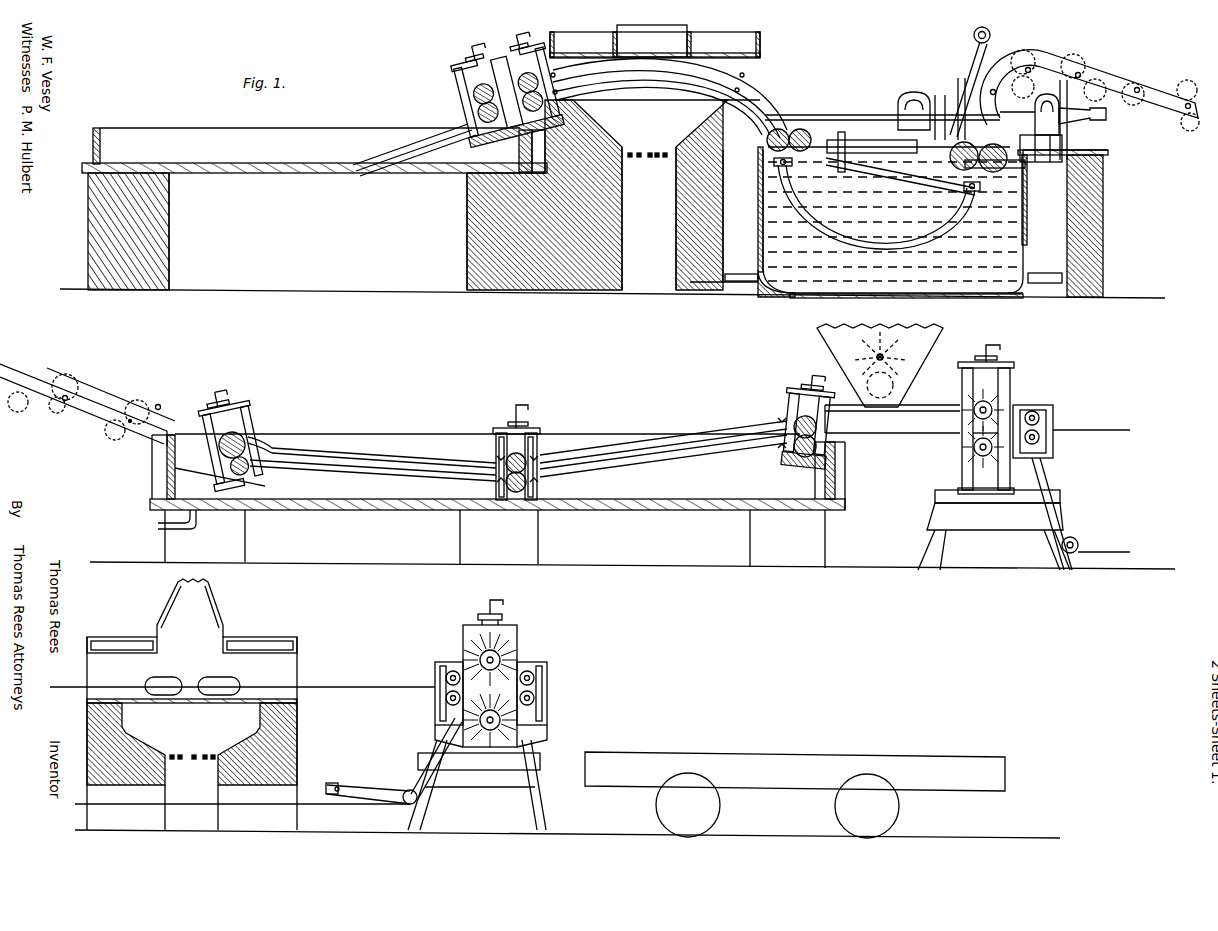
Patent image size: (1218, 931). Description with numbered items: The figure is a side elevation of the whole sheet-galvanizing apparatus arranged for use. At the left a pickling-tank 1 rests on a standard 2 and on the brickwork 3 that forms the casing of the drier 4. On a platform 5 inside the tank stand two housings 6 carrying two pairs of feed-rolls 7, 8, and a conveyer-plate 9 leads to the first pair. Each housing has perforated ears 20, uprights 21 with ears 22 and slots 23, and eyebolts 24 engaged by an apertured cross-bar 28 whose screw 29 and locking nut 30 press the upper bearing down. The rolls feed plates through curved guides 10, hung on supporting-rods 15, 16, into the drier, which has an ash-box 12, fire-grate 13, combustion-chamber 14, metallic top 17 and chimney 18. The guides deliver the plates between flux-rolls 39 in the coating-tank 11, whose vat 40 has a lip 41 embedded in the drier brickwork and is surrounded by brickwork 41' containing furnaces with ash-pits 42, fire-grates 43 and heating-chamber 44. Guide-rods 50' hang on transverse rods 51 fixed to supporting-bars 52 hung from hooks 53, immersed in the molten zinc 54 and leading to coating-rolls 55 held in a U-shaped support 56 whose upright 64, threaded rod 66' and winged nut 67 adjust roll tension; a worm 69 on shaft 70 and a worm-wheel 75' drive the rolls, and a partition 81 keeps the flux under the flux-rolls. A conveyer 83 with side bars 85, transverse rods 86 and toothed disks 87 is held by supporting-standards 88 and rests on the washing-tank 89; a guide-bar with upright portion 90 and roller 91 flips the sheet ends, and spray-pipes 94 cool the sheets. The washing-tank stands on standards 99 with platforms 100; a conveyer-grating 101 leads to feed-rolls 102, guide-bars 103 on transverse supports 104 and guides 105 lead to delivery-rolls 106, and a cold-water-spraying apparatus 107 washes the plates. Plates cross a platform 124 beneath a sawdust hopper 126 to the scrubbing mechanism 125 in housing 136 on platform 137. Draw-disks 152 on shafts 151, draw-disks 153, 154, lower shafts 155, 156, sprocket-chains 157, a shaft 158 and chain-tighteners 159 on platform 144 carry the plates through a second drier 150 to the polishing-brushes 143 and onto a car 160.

The pickling-tank 1 is at (298, 138).
The standard 2 is at (170, 207).
The brickwork 3 is at (466, 205).
The drier 4 is at (663, 45).
The platform 5 is at (490, 140).
The housings 6 is at (505, 86).
The feed-rolls 7 is at (458, 104).
The feed-rolls 8 is at (556, 58).
The conveyer-plate 9 is at (408, 140).
The guides 10 is at (646, 86).
The coating-tank 11 is at (868, 112).
The ash-box 12 is at (649, 218).
The fire-grate 13 is at (647, 143).
The combustion-chamber 14 is at (597, 195).
The supporting-rod 15 is at (745, 78).
The supporting-rod 16 is at (588, 104).
The metallic top 17 is at (712, 58).
The opening or chimney 18 is at (652, 41).
The perforated ears 20 is at (418, 154).
The uprights 21 is at (462, 88).
The perforated ears 22 is at (466, 80).
The slots 23 is at (466, 95).
The eyebolts 24 is at (466, 62).
The apertured cross-bar 28 is at (495, 430).
The threaded screw or bolt 29 is at (522, 418).
The locking bar or nut 30 is at (540, 424).
The flux-rolls 39 is at (786, 128).
The tank or vat proper 40 is at (760, 215).
The lip 41 is at (724, 216).
The brickwork 41' is at (773, 294).
The ash-pits 42 is at (1038, 290).
The fire-grates 43 is at (1040, 270).
The heating-chamber 44 is at (1045, 213).
The guide-rods 50' is at (893, 224).
The transverse rods 51 is at (815, 156).
The supporting-bar 52 is at (905, 205).
The hooks 53 is at (852, 148).
The molten zinc 54 is at (945, 262).
The coating-rolls 55 is at (1063, 223).
The U-shaped support 56 is at (900, 128).
The upright 64 is at (1062, 103).
The threaded rod 66' is at (946, 95).
The winged nut 67 is at (935, 96).
The worm 69 is at (800, 128).
The shaft 70 is at (815, 122).
The worm-wheel 75' is at (1058, 156).
The partition 81 is at (848, 240).
The conveyer 83 is at (1159, 119).
The side bars 85 is at (1110, 78).
The transverse rods 86 is at (1160, 86).
The toothed disks 87 is at (1128, 70).
The supporting-standards 88 is at (1068, 143).
The washing-tank 89 is at (419, 422).
The upright portion 90 is at (974, 40).
The roller 91 is at (991, 36).
The spray-pipes 94 is at (161, 406).
The standards 99 is at (240, 548).
The platform 100 is at (250, 492).
The conveyer-grating 101 is at (190, 437).
The feed-rolls 102 is at (256, 418).
The guide-bars 103 is at (342, 454).
The transverse supports 104 is at (280, 440).
The guides 105 is at (668, 438).
The delivery-rolls 106 is at (793, 421).
The cold-water-spraying apparatus 107 is at (776, 430).
The platform 124 is at (875, 416).
The scrubbing mechanism 125 is at (1071, 421).
The hopper 126 is at (906, 362).
The housing 136 is at (1010, 386).
The platform 137 is at (995, 514).
The polishing-brushes 143 is at (508, 666).
The platform 144 is at (540, 758).
The drier 150 is at (242, 704).
The shafts 151 is at (1046, 412).
The draw-disks 152 is at (1046, 418).
The draw-disks 153 is at (442, 674).
The draw-disks 154 is at (548, 676).
The lower shaft 155 is at (1048, 437).
The lower shaft 156 is at (440, 697).
The sprocket-chains 157 is at (316, 686).
The shaft 158 is at (1074, 544).
The chain-tighteners 159 is at (368, 793).
The car 160 is at (632, 758).